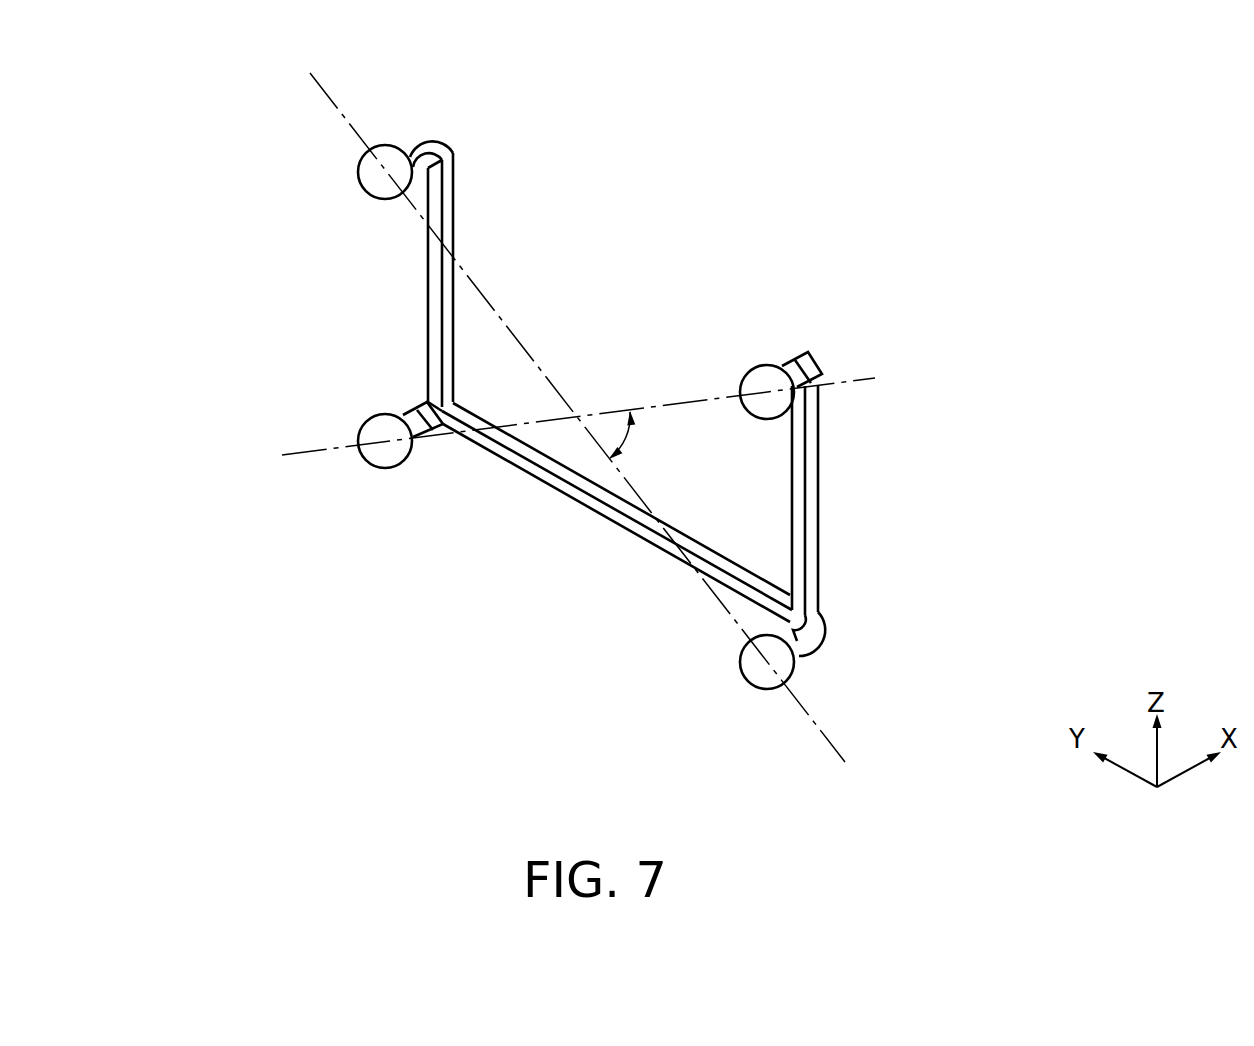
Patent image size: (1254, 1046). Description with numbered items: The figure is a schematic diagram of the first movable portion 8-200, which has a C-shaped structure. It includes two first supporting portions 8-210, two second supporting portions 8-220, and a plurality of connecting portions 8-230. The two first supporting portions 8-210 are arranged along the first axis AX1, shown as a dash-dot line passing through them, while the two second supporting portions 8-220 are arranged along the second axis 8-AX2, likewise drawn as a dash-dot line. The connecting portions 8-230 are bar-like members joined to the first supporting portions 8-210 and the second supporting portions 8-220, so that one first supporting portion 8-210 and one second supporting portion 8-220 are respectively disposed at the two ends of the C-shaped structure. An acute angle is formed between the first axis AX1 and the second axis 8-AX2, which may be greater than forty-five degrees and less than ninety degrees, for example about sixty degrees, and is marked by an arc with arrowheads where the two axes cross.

The first movable portion 8-200 is at (167, 54).
The first supporting portion 8-210 is at (367, 200).
The second supporting portion 8-220 is at (383, 423).
The connecting portion 8-230 is at (437, 315).
The first axis AX1 is at (320, 92).
The second axis 8-AX2 is at (297, 453).